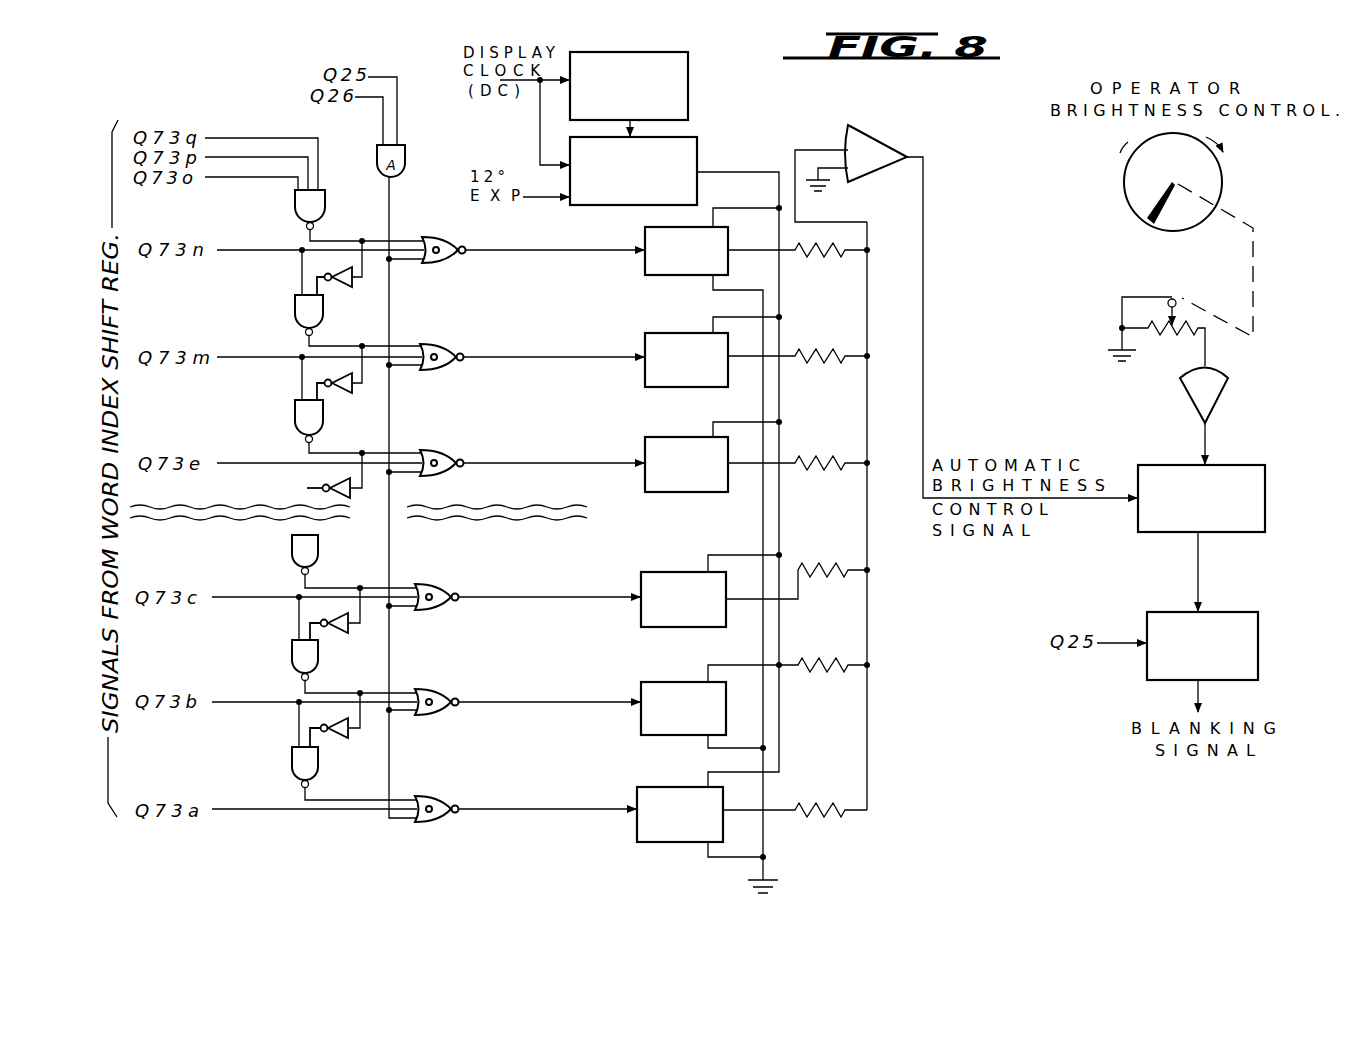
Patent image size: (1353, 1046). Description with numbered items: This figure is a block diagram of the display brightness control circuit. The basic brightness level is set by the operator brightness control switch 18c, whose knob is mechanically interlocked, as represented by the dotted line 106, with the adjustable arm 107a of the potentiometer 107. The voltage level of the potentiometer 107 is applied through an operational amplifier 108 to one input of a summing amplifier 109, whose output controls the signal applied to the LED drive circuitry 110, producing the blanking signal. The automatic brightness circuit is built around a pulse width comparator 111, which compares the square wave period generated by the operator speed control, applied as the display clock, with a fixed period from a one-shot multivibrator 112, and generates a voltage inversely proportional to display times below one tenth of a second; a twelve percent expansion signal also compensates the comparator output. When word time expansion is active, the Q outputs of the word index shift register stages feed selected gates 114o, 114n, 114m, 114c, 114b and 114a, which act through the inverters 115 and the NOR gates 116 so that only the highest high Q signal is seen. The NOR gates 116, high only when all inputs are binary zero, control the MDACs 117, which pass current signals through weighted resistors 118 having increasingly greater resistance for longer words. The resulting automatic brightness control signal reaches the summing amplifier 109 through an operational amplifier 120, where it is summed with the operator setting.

The operator brightness control switch 18c is at (1125, 194).
The dotted line 106 is at (1256, 293).
The potentiometer 107 is at (1172, 334).
The adjustable arm 107a is at (1172, 300).
The operational amplifier 108 is at (1217, 400).
The summing amplifier 109 is at (1265, 518).
The LED drive circuitry 110 is at (1258, 651).
The pulse width comparator 111 is at (620, 205).
The one-shot multivibrator 112 is at (652, 28).
The gate 114o is at (295, 201).
The gate 114n is at (295, 309).
The gate 114m is at (295, 417).
The gate 114c is at (292, 549).
The gate 114b is at (292, 655).
The gate 114a is at (292, 760).
The inverter 115 is at (322, 515).
The NOR gate 116 is at (516, 544).
The multiplier-digital to analog converter (MDAC) 117 is at (656, 534).
The weighted resistor 118 is at (795, 536).
The operational amplifier 120 is at (868, 136).